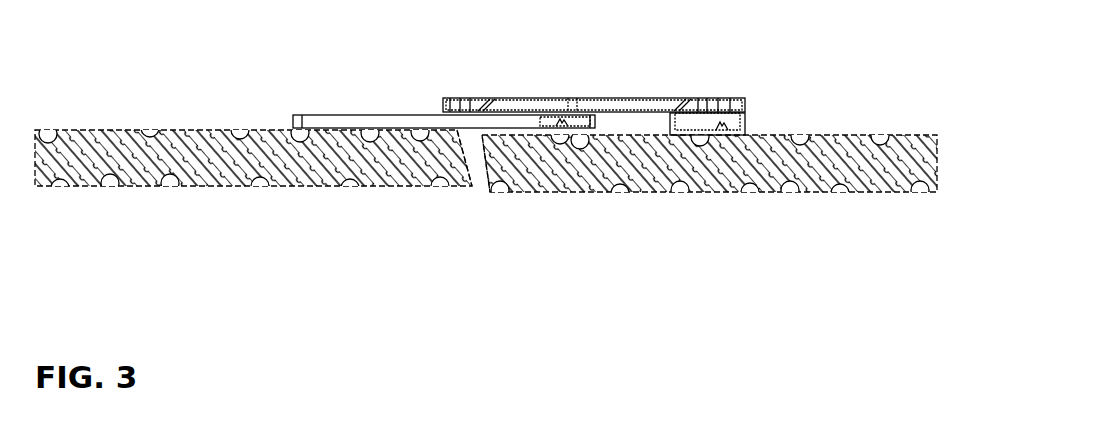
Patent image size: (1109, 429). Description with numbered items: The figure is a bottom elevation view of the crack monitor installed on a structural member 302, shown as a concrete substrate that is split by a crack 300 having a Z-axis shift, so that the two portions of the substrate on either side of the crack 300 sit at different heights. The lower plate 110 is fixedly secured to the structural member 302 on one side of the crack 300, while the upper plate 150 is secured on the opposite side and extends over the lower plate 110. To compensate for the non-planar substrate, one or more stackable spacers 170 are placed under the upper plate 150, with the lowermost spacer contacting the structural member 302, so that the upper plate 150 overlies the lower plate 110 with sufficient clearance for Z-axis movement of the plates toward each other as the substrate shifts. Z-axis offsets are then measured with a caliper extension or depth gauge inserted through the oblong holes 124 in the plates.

The lower plate 110 is at (331, 96).
The oblong holes 124 is at (456, 80).
The upper plate 150 is at (546, 80).
The stackable spacers 170 is at (764, 118).
The crack 300 is at (487, 200).
The structural member 302 is at (352, 200).